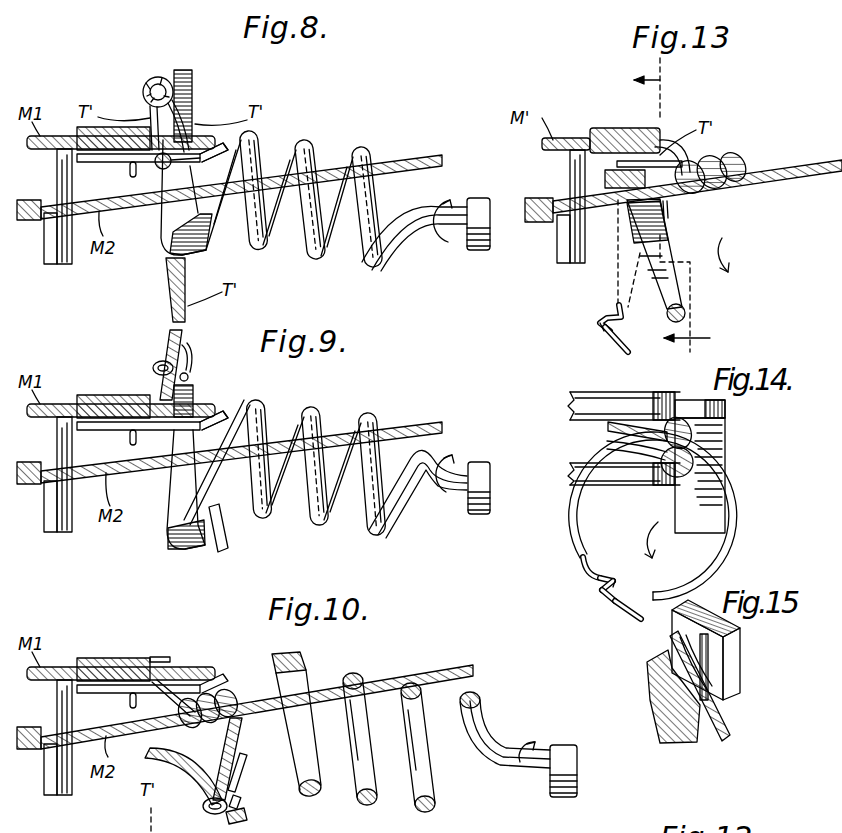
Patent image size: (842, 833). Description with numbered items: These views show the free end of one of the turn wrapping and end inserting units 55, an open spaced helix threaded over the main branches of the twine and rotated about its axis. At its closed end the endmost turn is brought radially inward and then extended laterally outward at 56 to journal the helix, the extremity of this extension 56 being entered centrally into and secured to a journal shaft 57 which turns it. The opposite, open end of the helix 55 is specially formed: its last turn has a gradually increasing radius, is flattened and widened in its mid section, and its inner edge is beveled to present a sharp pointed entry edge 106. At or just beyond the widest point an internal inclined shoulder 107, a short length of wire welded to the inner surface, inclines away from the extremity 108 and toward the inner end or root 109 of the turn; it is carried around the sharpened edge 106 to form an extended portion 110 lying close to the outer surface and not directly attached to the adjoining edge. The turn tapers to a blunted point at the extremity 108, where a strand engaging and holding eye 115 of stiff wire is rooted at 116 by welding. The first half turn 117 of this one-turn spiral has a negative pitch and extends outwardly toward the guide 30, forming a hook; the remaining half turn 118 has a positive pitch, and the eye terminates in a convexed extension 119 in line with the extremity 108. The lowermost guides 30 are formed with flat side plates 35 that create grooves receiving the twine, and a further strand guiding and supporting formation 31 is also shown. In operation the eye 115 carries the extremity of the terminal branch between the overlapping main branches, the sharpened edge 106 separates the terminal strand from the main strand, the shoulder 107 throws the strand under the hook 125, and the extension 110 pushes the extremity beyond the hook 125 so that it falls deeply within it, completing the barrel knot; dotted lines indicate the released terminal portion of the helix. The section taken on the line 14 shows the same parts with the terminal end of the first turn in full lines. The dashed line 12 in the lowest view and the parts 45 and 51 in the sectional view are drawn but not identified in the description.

In FIG. 10, the section line 12 is at (196, 775).
In FIG. 13, the section line 14 is at (679, 205).
In FIG. 13, the lowermost guide 30 is at (612, 128).
In FIG. 8, the strand guiding and supporting formation 31 is at (240, 140).
In FIG. 9, the strand guiding and supporting formation 31 is at (226, 413).
In FIG. 10, the flat side plate 35 is at (162, 657).
In FIG. 14, the flat side plate 35 is at (680, 393).
In FIG. 14, the block 45 is at (720, 510).
In FIG. 14, the plate 51 is at (724, 405).
In FIG. 8, the turn wrapping and end inserting unit 55 is at (351, 143).
In FIG. 9, the turn wrapping and end inserting unit 55 is at (358, 408).
In FIG. 10, the turn wrapping and end inserting unit 55 is at (358, 673).
In FIG. 8, the lateral extension 56 is at (455, 240).
In FIG. 9, the lateral extension 56 is at (455, 500).
In FIG. 10, the lateral extension 56 is at (545, 750).
In FIG. 8, the journal shaft 57 is at (478, 198).
In FIG. 9, the journal shaft 57 is at (478, 462).
In FIG. 10, the journal shaft 57 is at (550, 790).
In FIG. 13, the sharp pointed entry edge 106 is at (622, 198).
In FIG. 15, the sharp pointed entry edge 106 is at (668, 730).
In FIG. 9, the internal inclined shoulder 107 is at (172, 515).
In FIG. 14, the internal inclined shoulder 107 is at (638, 462).
In FIG. 15, the internal inclined shoulder 107 is at (655, 692).
In FIG. 8, the extremity 108 is at (190, 72).
In FIG. 9, the extremity 108 is at (196, 395).
In FIG. 14, the extremity 108 is at (578, 566).
In FIG. 9, the inner end 109 is at (218, 494).
In FIG. 14, the inner end 109 is at (680, 580).
In FIG. 9, the extended portion 110 is at (224, 536).
In FIG. 14, the extended portion 110 is at (727, 452).
In FIG. 9, the strand engaging and holding eye 115 is at (165, 361).
In FIG. 13, the strand engaging and holding eye 115 is at (600, 318).
In FIG. 14, the strand engaging and holding eye 115 is at (601, 586).
In FIG. 9, the root 116 is at (190, 373).
In FIG. 10, the root 116 is at (246, 815).
In FIG. 13, the root 116 is at (670, 214).
In FIG. 14, the root 116 is at (588, 576).
In FIG. 8, the first half turn 117 is at (151, 105).
In FIG. 10, the first half turn 117 is at (244, 798).
In FIG. 13, the first half turn 117 is at (611, 310).
In FIG. 14, the first half turn 117 is at (614, 585).
In FIG. 8, the remaining half turn 118 is at (162, 78).
In FIG. 10, the remaining half turn 118 is at (213, 797).
In FIG. 13, the remaining half turn 118 is at (604, 333).
In FIG. 14, the remaining half turn 118 is at (601, 601).
In FIG. 8, the convexed extension 119 is at (182, 120).
In FIG. 9, the convexed extension 119 is at (190, 350).
In FIG. 10, the convexed extension 119 is at (247, 768).
In FIG. 13, the convexed extension 119 is at (620, 340).
In FIG. 14, the convexed extension 119 is at (629, 615).
In FIG. 14, the hook 125 is at (608, 428).
In FIG. 15, the hook 125 is at (690, 652).